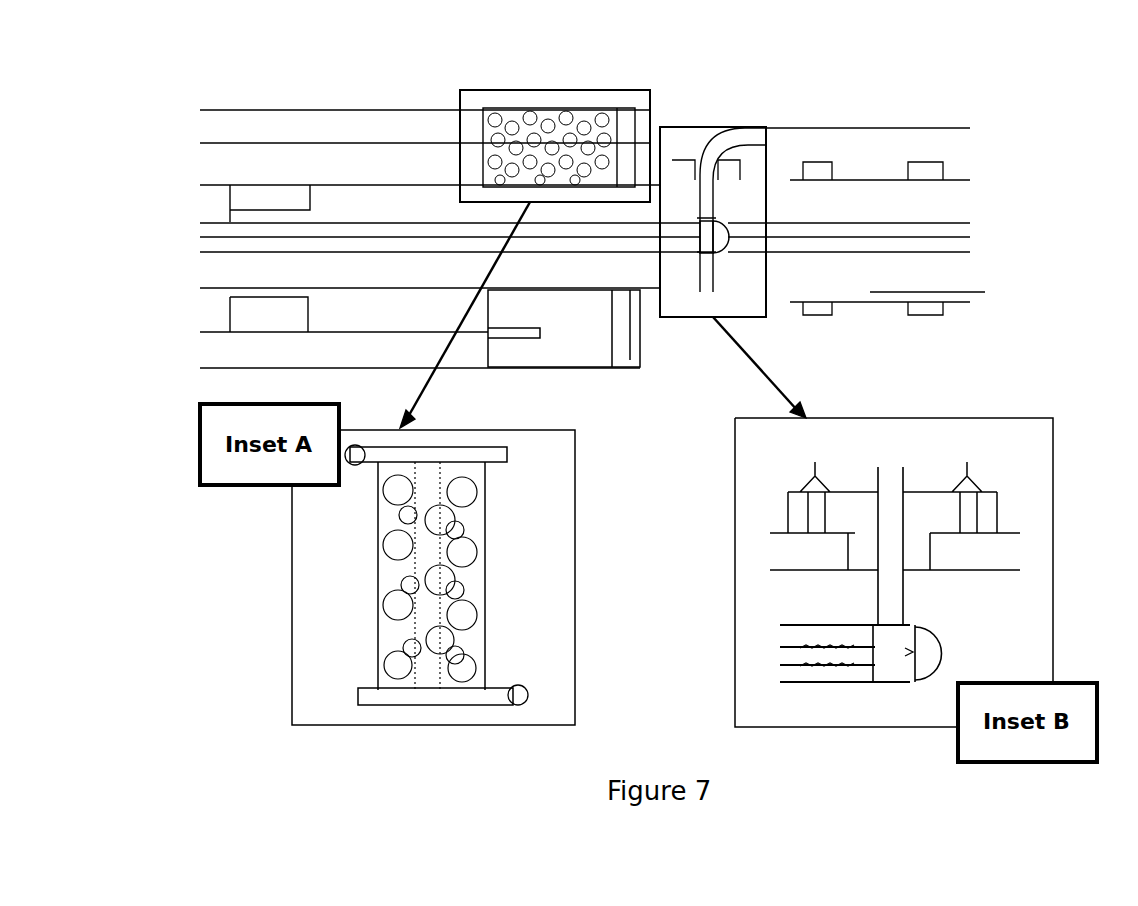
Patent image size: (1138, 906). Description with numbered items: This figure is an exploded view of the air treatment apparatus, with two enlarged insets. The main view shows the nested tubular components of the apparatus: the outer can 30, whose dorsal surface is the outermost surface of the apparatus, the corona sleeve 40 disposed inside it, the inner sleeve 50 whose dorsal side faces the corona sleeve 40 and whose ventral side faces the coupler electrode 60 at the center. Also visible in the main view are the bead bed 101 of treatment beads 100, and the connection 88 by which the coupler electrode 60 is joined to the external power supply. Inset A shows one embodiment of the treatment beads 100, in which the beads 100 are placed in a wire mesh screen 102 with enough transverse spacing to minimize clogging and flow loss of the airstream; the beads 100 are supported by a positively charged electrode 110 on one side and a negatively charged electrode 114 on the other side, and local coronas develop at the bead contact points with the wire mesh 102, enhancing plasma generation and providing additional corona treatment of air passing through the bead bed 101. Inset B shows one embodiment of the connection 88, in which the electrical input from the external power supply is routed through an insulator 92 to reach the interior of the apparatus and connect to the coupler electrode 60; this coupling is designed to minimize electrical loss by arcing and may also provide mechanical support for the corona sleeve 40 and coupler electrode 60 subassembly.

The outer can 30 is at (280, 108).
The corona sleeve 40 is at (308, 143).
The inner sleeve 50 is at (222, 184).
The coupler electrode 60 is at (338, 237).
The connection 88 is at (700, 228).
The insulator 92 is at (722, 172).
The treatment beads 100 is at (555, 120).
The bead bed 101 is at (517, 108).
The wire mesh screen 102 is at (380, 560).
The positive charged electrode 110 is at (507, 447).
The negative charged electrode 114 is at (418, 694).